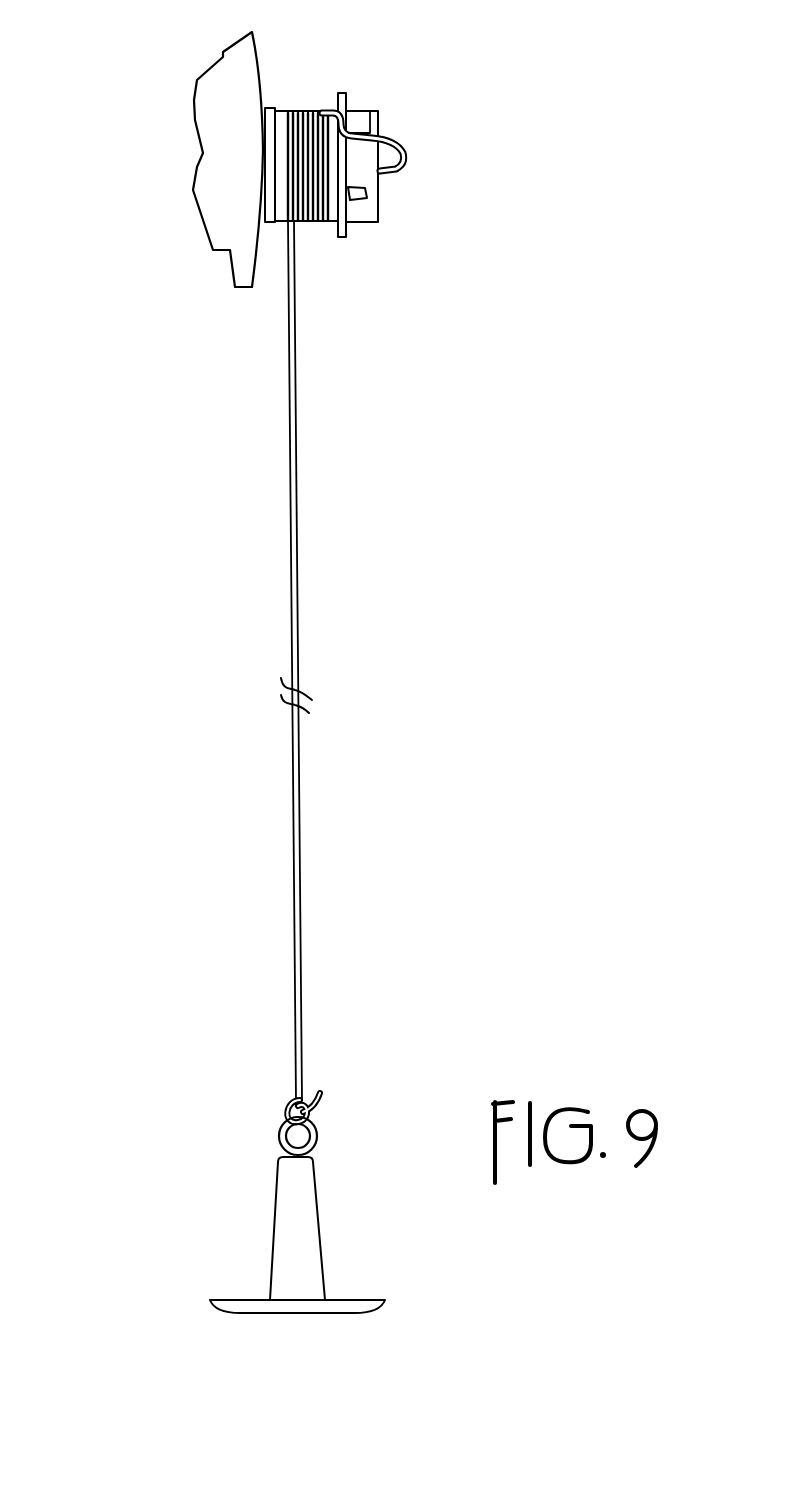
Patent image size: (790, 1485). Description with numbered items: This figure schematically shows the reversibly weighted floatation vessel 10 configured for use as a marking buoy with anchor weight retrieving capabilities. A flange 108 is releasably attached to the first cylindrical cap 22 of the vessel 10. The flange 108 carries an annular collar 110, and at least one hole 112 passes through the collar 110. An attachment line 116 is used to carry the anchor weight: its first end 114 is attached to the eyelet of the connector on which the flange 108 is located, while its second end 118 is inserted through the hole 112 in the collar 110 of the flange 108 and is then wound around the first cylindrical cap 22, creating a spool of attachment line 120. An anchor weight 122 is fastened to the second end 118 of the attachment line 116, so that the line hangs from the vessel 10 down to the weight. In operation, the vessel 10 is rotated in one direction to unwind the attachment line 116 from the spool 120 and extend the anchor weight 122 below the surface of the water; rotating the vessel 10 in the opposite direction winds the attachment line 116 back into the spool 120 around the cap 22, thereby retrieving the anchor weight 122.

The reversibly weighted floatation vessel 10 is at (150, 143).
The first cylindrical cap 22 is at (282, 127).
The flange 108 is at (370, 120).
The annular collar 110 is at (348, 100).
The hole 112 is at (357, 201).
The first end 114 is at (390, 181).
The attachment line 116 is at (308, 620).
The second end 118 is at (309, 1061).
The spool of attachment line 120 is at (314, 229).
The anchor weight 122 is at (287, 1202).